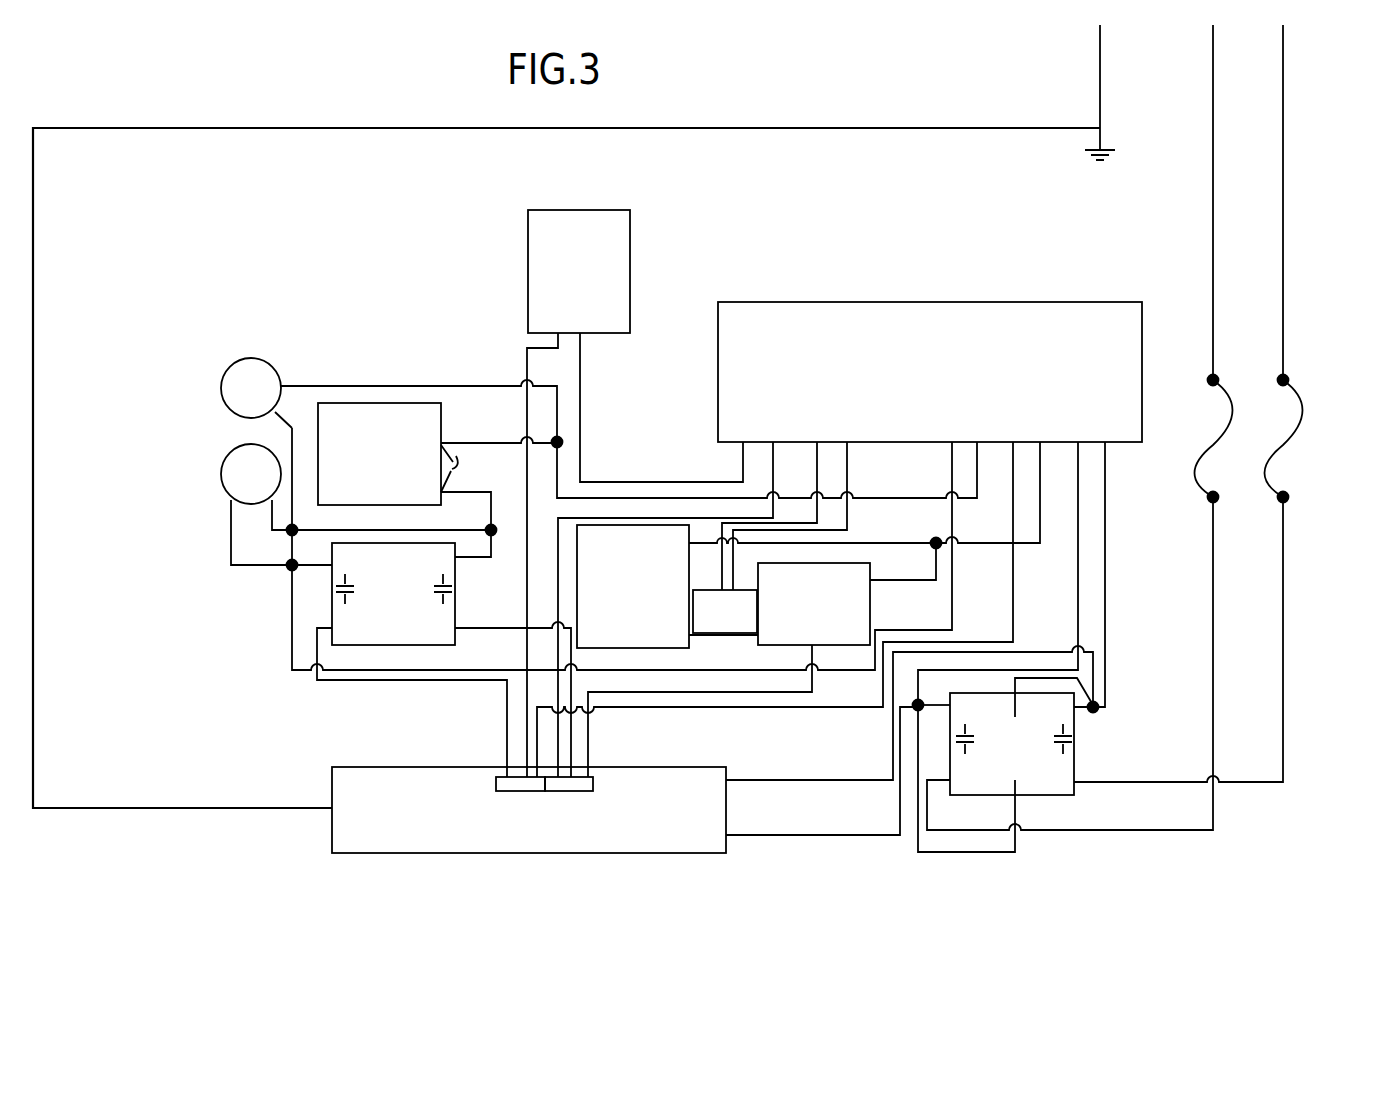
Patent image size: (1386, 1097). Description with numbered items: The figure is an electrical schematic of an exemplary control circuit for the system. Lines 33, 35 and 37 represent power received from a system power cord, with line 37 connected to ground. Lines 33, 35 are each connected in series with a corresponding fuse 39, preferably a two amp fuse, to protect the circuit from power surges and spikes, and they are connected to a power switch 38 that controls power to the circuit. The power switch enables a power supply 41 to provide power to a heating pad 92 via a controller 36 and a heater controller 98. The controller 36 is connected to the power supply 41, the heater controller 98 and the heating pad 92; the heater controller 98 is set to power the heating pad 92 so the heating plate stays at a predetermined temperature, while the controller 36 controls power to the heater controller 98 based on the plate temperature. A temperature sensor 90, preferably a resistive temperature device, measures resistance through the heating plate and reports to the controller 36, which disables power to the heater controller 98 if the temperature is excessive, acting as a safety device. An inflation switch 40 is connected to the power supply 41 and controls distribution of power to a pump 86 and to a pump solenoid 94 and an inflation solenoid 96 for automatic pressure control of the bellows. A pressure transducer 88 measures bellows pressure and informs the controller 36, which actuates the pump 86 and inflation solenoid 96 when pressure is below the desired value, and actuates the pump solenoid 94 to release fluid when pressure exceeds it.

The line 33 is at (1283, 130).
The line 35 is at (1213, 138).
The controller 36 is at (1105, 302).
The line 37 is at (1100, 107).
The power switch 38 is at (1035, 795).
The fuse 39 is at (1220, 386).
The inflation switch 40 is at (455, 606).
The power supply 41 is at (432, 783).
The pump 86 is at (378, 402).
The pressure transducer 88 is at (630, 287).
The temperature sensor 90 is at (728, 633).
The heating pad 92 is at (658, 525).
The pump solenoid 94 is at (233, 356).
The inflation solenoid 96 is at (239, 445).
The heater controller 98 is at (870, 595).